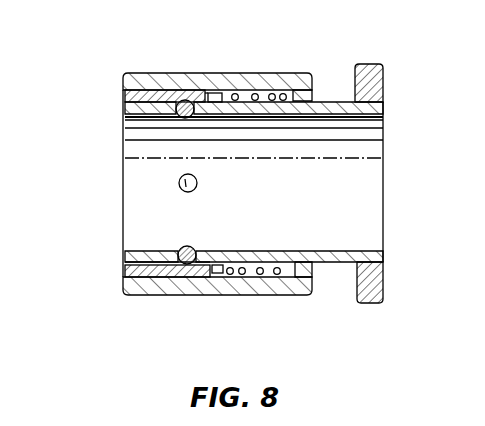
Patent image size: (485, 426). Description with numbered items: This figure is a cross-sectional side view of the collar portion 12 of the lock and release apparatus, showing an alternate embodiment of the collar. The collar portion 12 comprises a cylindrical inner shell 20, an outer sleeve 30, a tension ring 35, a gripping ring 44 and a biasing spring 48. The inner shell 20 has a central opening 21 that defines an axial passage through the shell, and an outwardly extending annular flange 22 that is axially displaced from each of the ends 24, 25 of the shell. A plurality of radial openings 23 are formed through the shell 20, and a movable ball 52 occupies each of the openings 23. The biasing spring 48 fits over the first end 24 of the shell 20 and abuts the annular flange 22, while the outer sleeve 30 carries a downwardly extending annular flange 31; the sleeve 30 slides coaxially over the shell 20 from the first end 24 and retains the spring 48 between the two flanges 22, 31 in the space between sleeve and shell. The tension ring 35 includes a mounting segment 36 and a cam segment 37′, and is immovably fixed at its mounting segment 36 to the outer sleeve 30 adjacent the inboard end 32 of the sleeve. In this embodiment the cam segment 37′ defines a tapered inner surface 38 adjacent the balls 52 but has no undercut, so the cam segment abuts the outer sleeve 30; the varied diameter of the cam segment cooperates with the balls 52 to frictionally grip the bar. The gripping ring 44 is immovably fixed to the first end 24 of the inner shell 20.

The collar portion 12 is at (420, 95).
The inner shell 20 is at (339, 276).
The central opening 21 is at (375, 233).
The annular flange 22 is at (214, 279).
The radial openings 23 is at (177, 115).
The first end 24 is at (383, 172).
The end 25 is at (123, 118).
The outer sleeve 30 is at (283, 72).
The annular flange 31 is at (316, 82).
The inboard end 32 is at (122, 78).
The tension ring 35 is at (114, 97).
The mounting segment 36 is at (142, 93).
The cam segment 37′ is at (183, 101).
The tapered inner surface 38 is at (211, 97).
The gripping ring 44 is at (383, 73).
The biasing spring 48 is at (261, 275).
The movable ball 52 is at (182, 101).